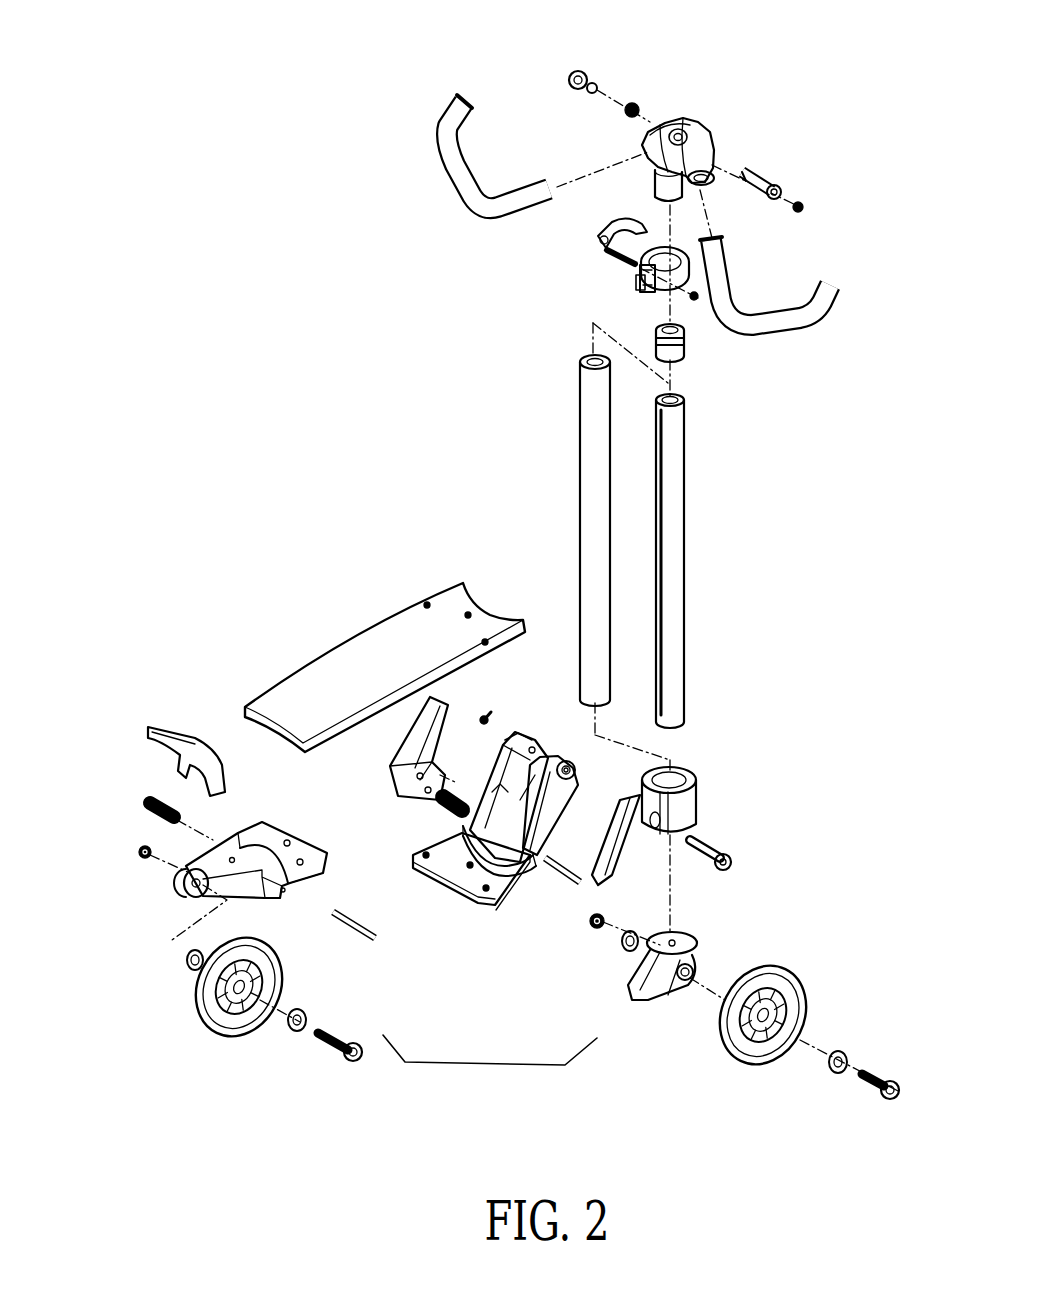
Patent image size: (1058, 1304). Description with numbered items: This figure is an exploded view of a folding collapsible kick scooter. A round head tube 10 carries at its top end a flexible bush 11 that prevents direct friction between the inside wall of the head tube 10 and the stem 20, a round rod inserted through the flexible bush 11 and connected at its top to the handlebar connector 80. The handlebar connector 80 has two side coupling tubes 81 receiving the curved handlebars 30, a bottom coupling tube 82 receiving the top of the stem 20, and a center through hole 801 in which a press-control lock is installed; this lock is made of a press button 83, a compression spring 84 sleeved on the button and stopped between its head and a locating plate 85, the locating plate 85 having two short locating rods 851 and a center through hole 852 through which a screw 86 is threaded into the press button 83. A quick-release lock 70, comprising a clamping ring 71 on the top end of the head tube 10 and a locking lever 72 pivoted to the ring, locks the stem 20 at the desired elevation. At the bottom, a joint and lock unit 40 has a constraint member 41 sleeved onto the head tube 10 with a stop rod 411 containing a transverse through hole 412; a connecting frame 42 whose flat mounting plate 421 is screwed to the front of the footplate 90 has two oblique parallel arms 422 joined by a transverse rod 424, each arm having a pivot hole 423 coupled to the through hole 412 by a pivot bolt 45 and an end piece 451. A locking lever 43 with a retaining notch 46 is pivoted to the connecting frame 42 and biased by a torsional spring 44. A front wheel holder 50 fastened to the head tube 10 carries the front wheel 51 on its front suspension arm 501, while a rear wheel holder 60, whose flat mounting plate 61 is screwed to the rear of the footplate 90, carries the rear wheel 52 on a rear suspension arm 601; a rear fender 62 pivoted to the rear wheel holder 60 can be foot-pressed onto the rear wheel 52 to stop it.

The head tube 10 is at (600, 477).
The flexible bush 11 is at (684, 347).
The stem 20 is at (675, 603).
The handlebars 30 is at (437, 128).
The joint and lock unit 40 is at (490, 1065).
The constraint member 41 is at (697, 805).
The stop rod 411 is at (610, 873).
The through hole 412 is at (688, 772).
The connecting frame 42 is at (452, 870).
The flat mounting plate 421 is at (462, 897).
The arms 422 is at (540, 810).
The pivot hole 423 is at (592, 768).
The transverse rod 424 is at (517, 735).
The locking lever 43 is at (405, 780).
The torsional spring 44 is at (443, 790).
The pivot bolt 45 is at (727, 848).
The end piece 451 is at (500, 760).
The retaining notch 46 is at (487, 714).
The front wheel holder 50 is at (697, 941).
The front suspension arm 501 is at (682, 982).
The front wheel 51 is at (803, 1011).
The rear wheel 52 is at (258, 1022).
The rear wheel holder 60 is at (300, 900).
The rear suspension arm 601 is at (150, 860).
The flat mounting plate 61 is at (228, 708).
The rear fender 62 is at (165, 728).
The quick-release lock 70 is at (640, 282).
The clamping ring 71 is at (642, 275).
The locking lever 72 is at (600, 240).
The handlebar connector 80 is at (662, 125).
The center through hole 801 is at (684, 130).
The side coupling tubes 81 is at (715, 160).
The bottom coupling tube 82 is at (655, 185).
The press button 83 is at (575, 72).
The compression spring 84 is at (630, 103).
The locating plate 85 is at (768, 180).
The locating rods 851 is at (778, 185).
The center through hole 852 is at (752, 190).
The screw 86 is at (803, 210).
The footplate 90 is at (355, 655).